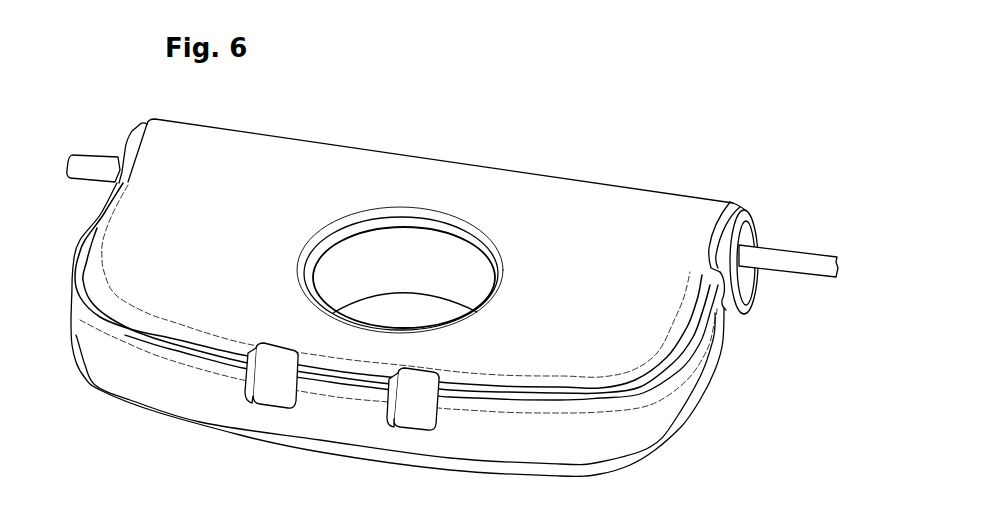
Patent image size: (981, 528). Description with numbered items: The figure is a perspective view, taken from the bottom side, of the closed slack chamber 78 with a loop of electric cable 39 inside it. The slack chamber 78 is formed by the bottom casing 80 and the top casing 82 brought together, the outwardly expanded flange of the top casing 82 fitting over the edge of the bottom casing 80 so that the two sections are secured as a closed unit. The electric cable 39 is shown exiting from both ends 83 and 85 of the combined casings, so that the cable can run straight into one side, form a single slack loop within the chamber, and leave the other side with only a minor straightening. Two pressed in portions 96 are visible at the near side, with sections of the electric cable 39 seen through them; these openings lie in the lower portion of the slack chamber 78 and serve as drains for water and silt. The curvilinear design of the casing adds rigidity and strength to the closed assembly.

The electric cable 39 is at (83, 157).
The slack chamber 78 is at (712, 139).
The bottom casing 80 is at (302, 163).
The top casing 82 is at (650, 455).
The end of the combined casings 83 is at (753, 217).
The end of the combined casings 85 is at (125, 150).
The pressed in portions 96 is at (273, 388).